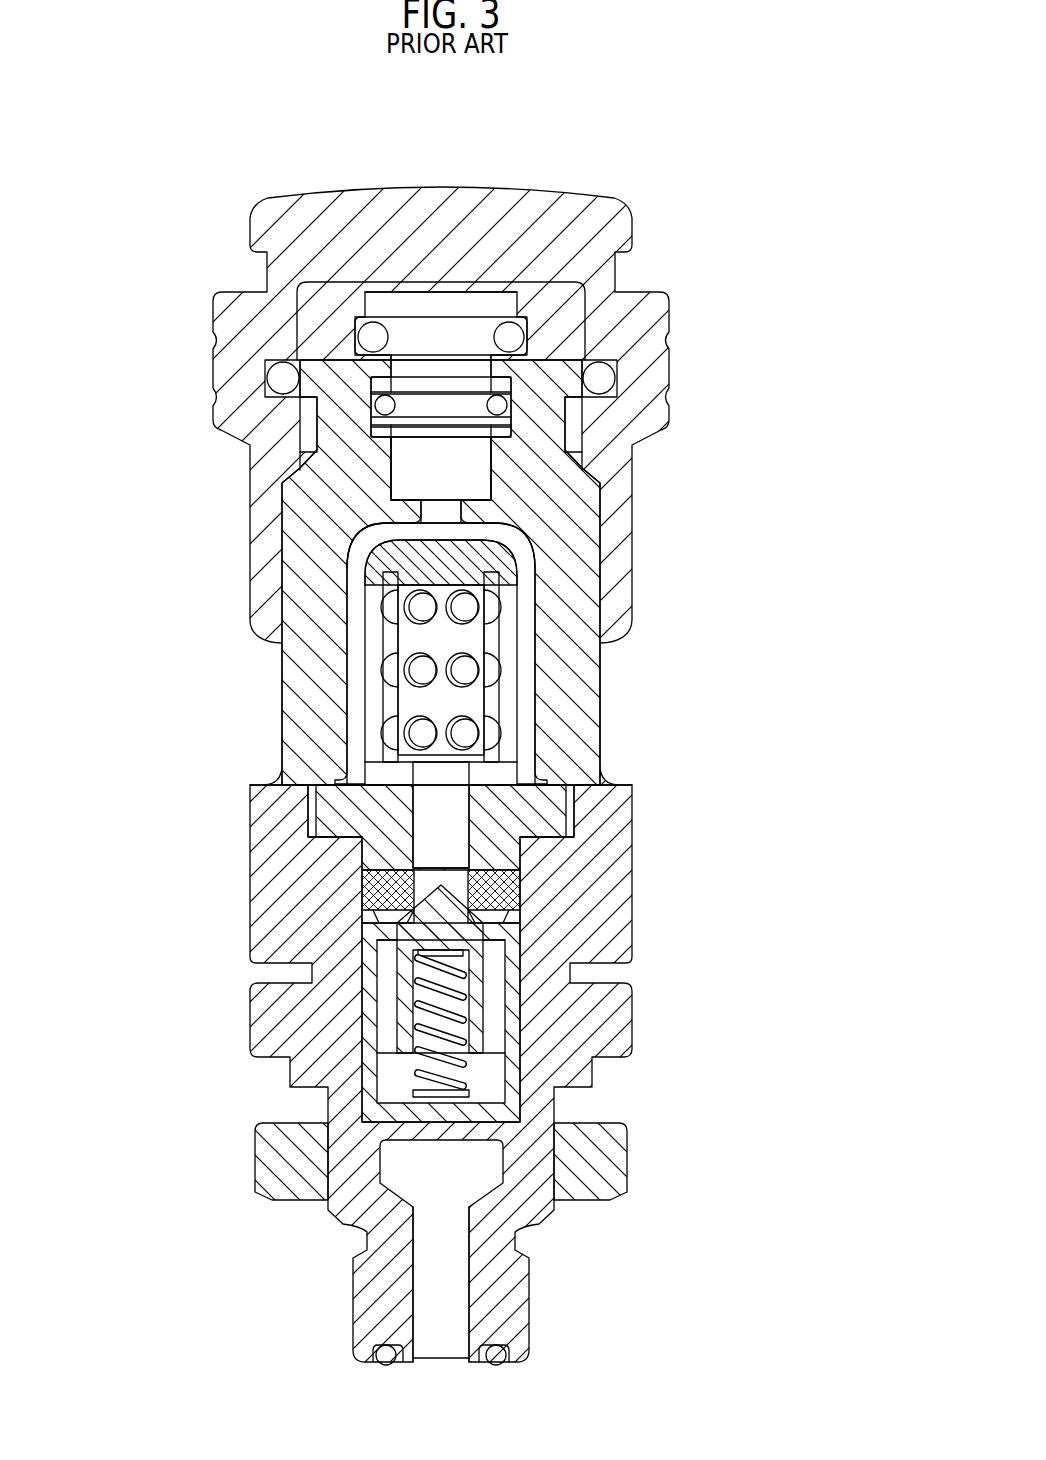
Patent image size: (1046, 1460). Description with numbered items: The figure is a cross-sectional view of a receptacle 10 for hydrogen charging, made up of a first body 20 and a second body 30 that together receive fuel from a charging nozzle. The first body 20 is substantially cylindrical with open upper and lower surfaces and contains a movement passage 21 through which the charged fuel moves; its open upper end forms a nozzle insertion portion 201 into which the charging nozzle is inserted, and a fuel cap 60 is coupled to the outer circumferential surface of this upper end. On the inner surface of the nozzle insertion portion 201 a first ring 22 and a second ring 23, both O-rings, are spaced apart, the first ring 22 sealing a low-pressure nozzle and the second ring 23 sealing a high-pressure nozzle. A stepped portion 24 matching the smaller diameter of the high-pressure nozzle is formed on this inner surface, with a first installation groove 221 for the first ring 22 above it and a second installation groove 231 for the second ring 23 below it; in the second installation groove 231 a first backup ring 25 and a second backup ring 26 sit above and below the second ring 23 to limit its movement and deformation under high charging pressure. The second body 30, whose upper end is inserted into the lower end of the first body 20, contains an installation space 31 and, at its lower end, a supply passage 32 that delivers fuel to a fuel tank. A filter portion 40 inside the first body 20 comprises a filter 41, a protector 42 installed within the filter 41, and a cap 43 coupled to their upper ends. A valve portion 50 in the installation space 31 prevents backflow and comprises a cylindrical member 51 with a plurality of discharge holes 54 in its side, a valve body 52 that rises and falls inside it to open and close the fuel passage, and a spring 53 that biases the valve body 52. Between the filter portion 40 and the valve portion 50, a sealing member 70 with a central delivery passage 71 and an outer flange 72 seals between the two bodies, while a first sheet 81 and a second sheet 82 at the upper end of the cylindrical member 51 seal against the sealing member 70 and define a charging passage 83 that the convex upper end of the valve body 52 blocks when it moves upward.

The receptacle 10 is at (178, 116).
The first body 20 is at (600, 723).
The nozzle insertion portion 201 is at (502, 282).
The movement passage 21 is at (443, 467).
The first ring 22 is at (517, 335).
The first installation groove 221 is at (386, 328).
The second ring 23 is at (506, 428).
The second installation groove 231 is at (417, 383).
The stepped portion 24 is at (385, 367).
The first backup ring 25 is at (506, 403).
The second backup ring 26 is at (585, 420).
The second body 30 is at (590, 1040).
The installation space 31 is at (440, 1027).
The supply passage 32 is at (467, 1267).
The filter portion 40 is at (351, 663).
The filter 41 is at (508, 610).
The protector 42 is at (497, 640).
The cap 43 is at (393, 533).
The valve portion 50 is at (462, 1011).
The cylindrical member 51 is at (370, 1020).
The valve body 52 is at (422, 950).
The spring 53 is at (445, 1090).
The discharge holes 54 is at (388, 968).
The fuel cap 60 is at (530, 300).
The sealing member 70 is at (493, 843).
The delivery passage 71 is at (415, 800).
The flange 72 is at (573, 795).
The first sheet 81 is at (390, 878).
The second sheet 82 is at (405, 905).
The charging passage 83 is at (500, 920).